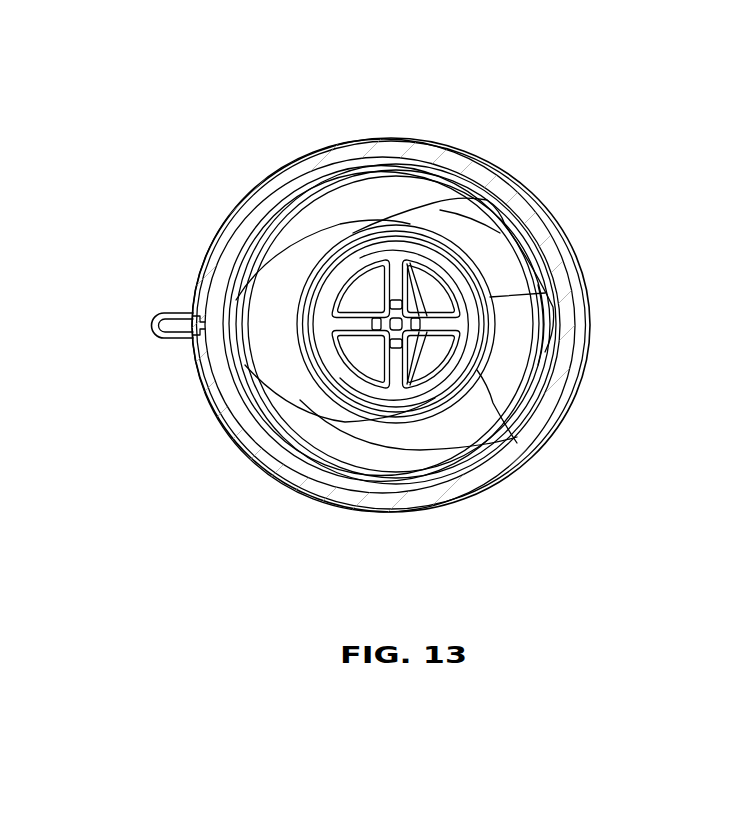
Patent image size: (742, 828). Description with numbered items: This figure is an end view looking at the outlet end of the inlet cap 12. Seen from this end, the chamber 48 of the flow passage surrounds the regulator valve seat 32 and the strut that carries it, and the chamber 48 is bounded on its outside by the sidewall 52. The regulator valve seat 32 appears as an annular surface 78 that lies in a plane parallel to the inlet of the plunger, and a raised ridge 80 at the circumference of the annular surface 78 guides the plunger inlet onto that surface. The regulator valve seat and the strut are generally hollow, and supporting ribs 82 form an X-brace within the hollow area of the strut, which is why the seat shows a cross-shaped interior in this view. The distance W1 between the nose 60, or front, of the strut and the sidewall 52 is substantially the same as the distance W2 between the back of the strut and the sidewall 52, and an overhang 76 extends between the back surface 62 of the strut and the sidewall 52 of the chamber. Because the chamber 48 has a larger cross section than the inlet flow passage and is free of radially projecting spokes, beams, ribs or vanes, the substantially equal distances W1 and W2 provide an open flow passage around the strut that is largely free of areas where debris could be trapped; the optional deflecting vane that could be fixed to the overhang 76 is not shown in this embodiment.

The inlet cap 12 is at (610, 151).
The regulator valve seat 32 is at (458, 283).
The chamber 48 is at (381, 197).
The sidewall 52 is at (362, 500).
The nose 60 is at (317, 362).
The back surface 62 is at (560, 402).
The overhang 76 is at (556, 354).
The annular surface 78 is at (413, 393).
The raised ridge 80 is at (457, 390).
The supporting ribs 82 is at (544, 292).
The distance between nose of strut and sidewall W1 is at (305, 326).
The distance between back of strut and sidewall W2 is at (538, 318).